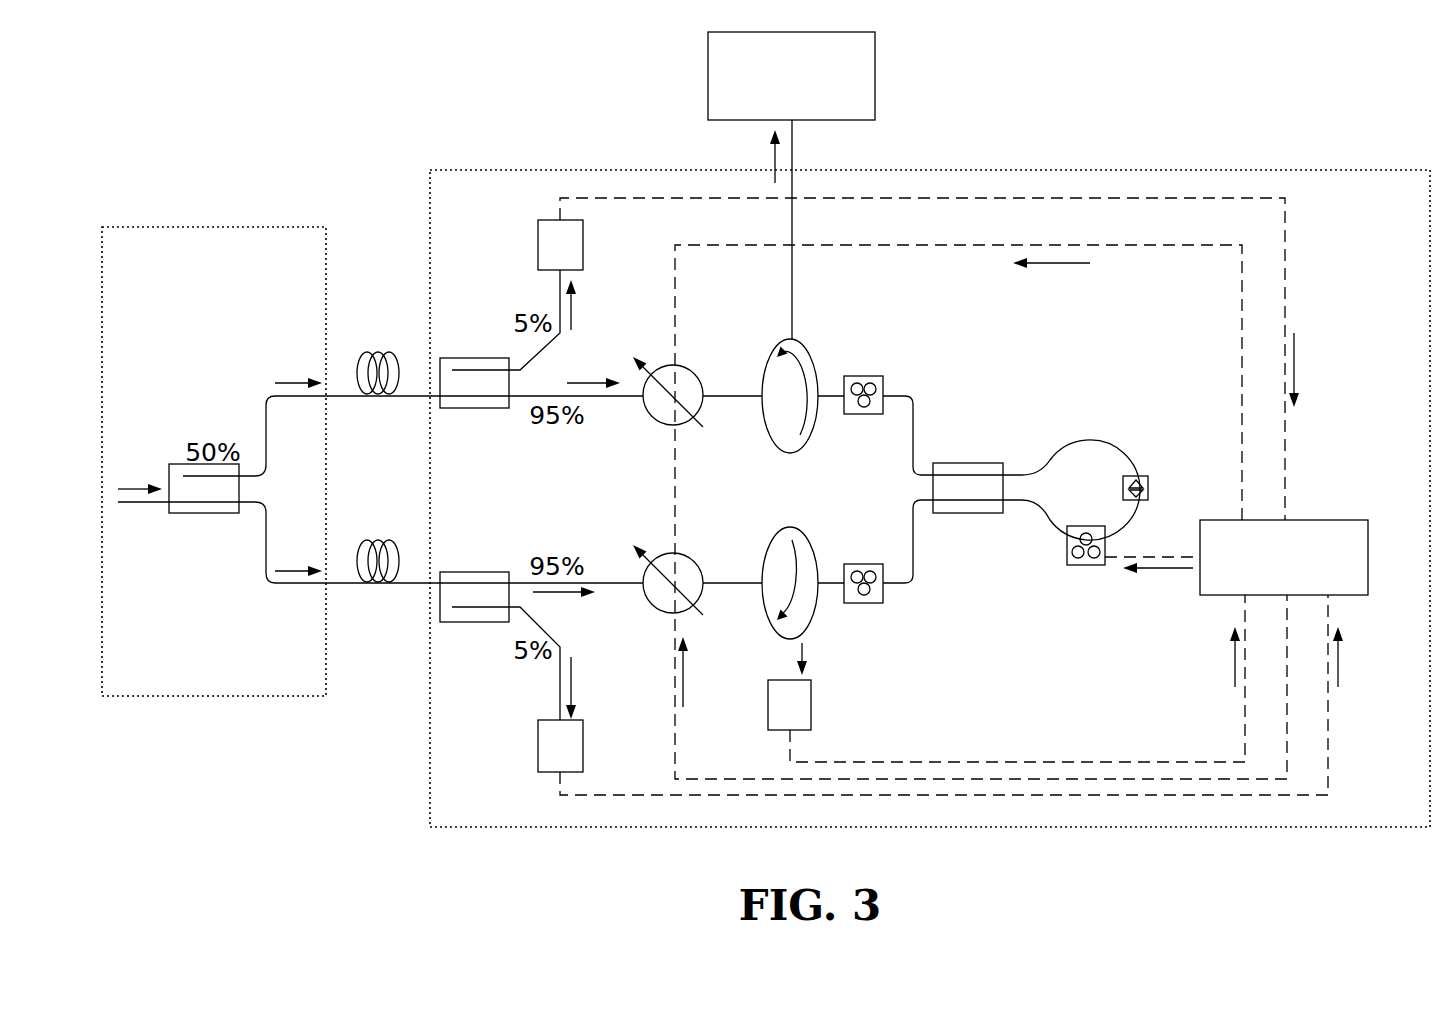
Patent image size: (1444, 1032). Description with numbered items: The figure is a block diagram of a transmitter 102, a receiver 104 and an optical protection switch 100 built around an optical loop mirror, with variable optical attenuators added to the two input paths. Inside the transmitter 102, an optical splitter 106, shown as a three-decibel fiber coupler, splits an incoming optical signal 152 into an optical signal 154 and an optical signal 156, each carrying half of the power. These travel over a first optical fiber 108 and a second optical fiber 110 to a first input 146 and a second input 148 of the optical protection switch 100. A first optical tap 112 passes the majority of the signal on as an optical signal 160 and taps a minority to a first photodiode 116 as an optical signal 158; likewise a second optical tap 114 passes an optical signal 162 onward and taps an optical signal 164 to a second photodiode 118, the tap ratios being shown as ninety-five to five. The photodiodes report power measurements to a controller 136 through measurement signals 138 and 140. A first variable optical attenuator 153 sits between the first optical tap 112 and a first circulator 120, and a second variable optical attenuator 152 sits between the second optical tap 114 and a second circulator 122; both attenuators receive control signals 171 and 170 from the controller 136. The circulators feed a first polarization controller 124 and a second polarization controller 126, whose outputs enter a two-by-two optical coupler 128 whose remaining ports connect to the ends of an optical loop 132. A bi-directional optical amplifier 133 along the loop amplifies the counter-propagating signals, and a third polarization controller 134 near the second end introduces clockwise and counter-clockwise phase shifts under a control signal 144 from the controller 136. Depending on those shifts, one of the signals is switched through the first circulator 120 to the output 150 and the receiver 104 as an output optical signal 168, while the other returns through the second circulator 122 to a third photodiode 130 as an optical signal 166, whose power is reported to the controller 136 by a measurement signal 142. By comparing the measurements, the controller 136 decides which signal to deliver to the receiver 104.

The optical protection switch 100 is at (1381, 211).
The transmitter 102 is at (194, 299).
The receiver 104 is at (771, 110).
The optical splitter 106 is at (199, 513).
The first optical fiber 108 is at (378, 352).
The second optical fiber 110 is at (378, 540).
The first optical tap 112 is at (470, 408).
The second optical tap 114 is at (470, 572).
The first photodiode 116 is at (538, 240).
The second photodiode 118 is at (538, 742).
The first circulator 120 is at (770, 350).
The second circulator 122 is at (784, 528).
The first polarization controller 124 is at (858, 376).
The second polarization controller 126 is at (858, 564).
The 2×2 optical coupler 128 is at (968, 513).
The third photodiode 130 is at (811, 700).
The optical loop 132 is at (1057, 442).
The bi-directional optical amplifier 133 is at (1148, 488).
The third polarization controller 134 is at (1082, 565).
The controller 136 is at (1323, 520).
The measurement signal 138 is at (1296, 352).
The measurement signal 140 is at (1340, 660).
The measurement signal 142 is at (1233, 655).
The control signal 144 is at (1155, 569).
The first input 146 is at (418, 399).
The second input 148 is at (418, 586).
The output 150 is at (796, 146).
The second variable optical attenuator 152 is at (132, 487).
The first variable optical attenuator 153 is at (676, 424).
The optical signal 154 is at (294, 382).
The optical signal 156 is at (294, 570).
The optical signal 158 is at (573, 302).
The optical signal 160 is at (600, 383).
The optical signal 162 is at (550, 593).
The optical signal 164 is at (573, 678).
The optical signal 166 is at (805, 652).
The output optical signal 168 is at (772, 148).
The control signal 170 is at (686, 686).
The control signal 171 is at (1057, 264).